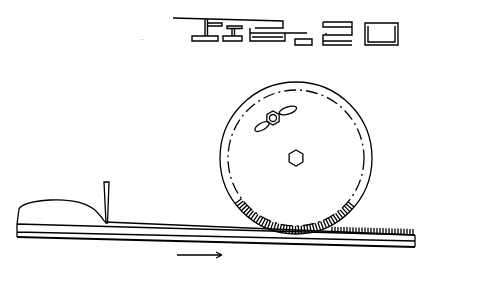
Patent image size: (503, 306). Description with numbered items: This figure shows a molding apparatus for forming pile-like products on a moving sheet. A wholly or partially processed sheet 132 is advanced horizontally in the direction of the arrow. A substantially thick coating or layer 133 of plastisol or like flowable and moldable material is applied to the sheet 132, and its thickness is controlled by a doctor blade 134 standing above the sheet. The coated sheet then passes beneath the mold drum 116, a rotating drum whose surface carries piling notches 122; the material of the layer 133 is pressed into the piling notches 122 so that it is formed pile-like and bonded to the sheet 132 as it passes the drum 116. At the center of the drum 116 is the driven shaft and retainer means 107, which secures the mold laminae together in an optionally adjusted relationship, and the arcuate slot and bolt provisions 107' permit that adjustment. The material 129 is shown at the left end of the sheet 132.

The mold drum 116 is at (368, 116).
The piling notches 122 is at (355, 207).
The driven shaft and retainer means 107 is at (306, 175).
The arcuate slot and bolt provisions 107' is at (237, 119).
The fleece web 129 is at (55, 187).
The sheet 132 is at (287, 240).
The coating or layer 133 is at (182, 229).
The doctor blade 134 is at (111, 205).